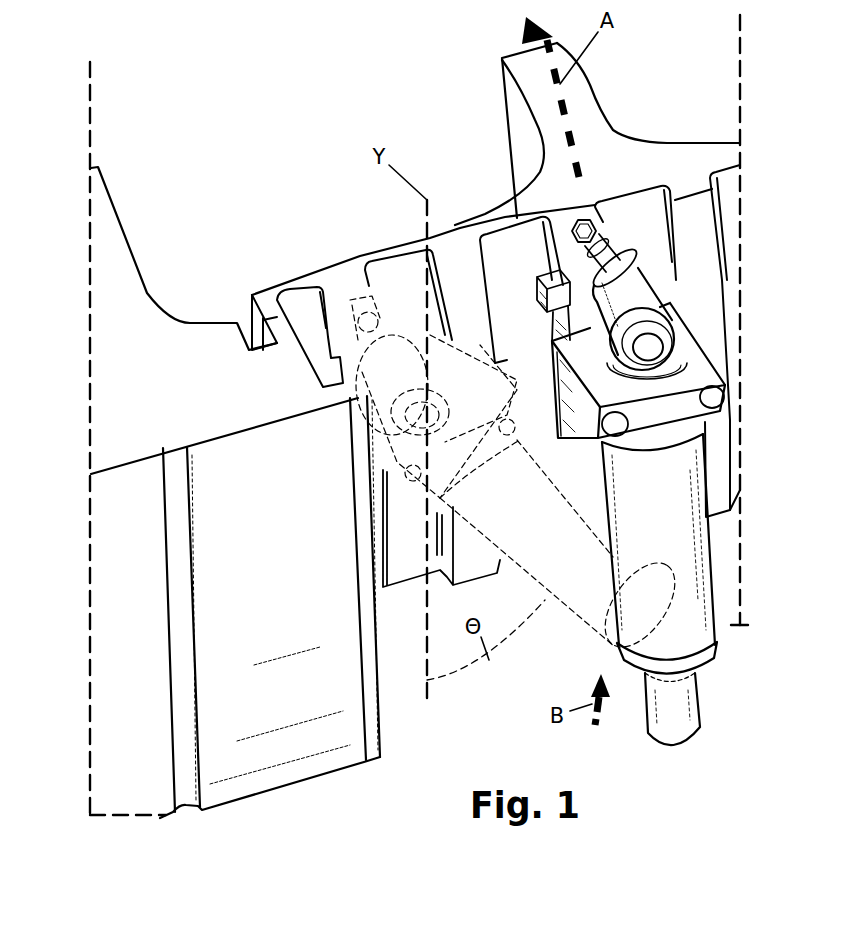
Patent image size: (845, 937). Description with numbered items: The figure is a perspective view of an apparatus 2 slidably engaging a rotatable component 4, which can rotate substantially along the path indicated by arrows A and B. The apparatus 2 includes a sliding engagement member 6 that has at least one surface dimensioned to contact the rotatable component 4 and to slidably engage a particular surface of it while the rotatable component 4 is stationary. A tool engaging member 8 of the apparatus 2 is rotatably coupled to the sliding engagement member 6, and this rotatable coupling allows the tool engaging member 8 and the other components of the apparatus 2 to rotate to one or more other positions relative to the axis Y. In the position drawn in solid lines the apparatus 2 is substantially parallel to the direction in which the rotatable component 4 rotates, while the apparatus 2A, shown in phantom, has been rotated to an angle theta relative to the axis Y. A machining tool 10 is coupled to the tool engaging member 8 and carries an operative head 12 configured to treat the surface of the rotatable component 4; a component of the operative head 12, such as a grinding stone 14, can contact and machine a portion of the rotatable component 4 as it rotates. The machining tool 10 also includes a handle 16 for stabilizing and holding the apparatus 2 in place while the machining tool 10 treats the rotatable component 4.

The apparatus 2 is at (637, 420).
The apparatus (rotated position, shown in phantom) 2A is at (398, 468).
The rotatable component 4 is at (643, 155).
The sliding engagement member 6 is at (549, 287).
The tool engaging member 8 is at (698, 378).
The machining tool 10 is at (640, 305).
The operative head 12 is at (603, 278).
The grinding stone 14 is at (572, 222).
The handle 16 is at (688, 550).